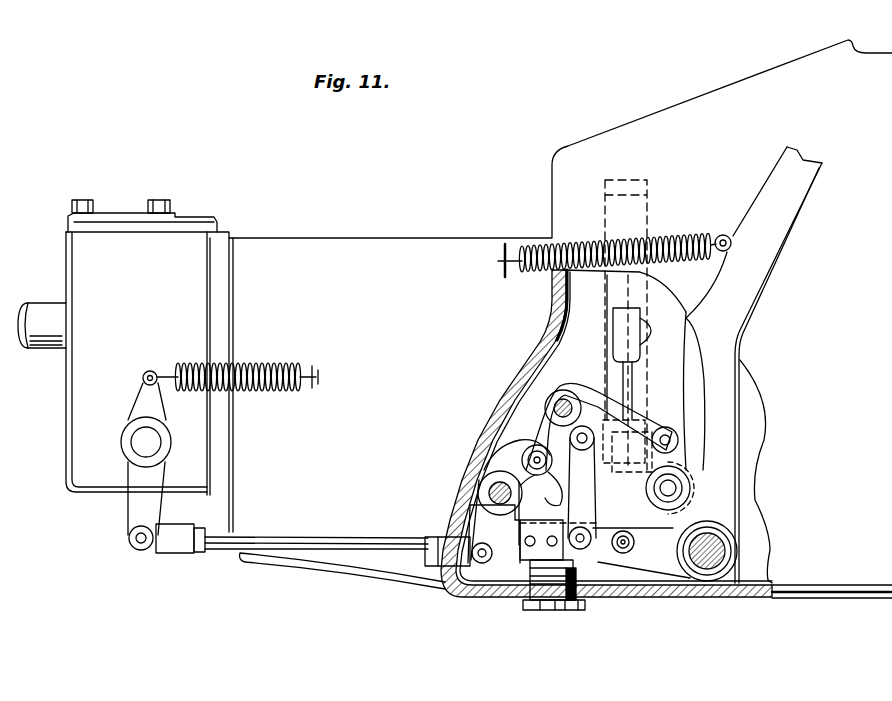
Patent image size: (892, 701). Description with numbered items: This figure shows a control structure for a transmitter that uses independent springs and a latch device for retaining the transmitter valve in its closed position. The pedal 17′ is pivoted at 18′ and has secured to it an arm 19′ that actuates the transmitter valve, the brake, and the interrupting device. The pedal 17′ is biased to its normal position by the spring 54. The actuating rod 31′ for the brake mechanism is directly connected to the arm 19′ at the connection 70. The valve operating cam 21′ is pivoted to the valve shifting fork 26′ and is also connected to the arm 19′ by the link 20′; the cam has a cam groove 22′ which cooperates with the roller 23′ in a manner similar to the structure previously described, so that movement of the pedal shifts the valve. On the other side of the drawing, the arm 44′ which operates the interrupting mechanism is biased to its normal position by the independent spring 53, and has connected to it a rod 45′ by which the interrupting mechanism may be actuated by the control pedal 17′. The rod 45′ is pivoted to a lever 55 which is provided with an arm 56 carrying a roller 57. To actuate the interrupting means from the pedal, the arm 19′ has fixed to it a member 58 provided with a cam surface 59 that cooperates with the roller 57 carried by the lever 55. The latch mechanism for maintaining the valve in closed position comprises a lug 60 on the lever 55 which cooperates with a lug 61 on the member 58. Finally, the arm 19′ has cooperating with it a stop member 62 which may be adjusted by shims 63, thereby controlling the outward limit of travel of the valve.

The pedal 17′ is at (745, 313).
The pivot 18′ is at (710, 560).
The arm 19′ is at (662, 560).
The link 20′ is at (600, 562).
The valve operating cam 21′ is at (591, 388).
The cam groove 22′ is at (530, 411).
The roller 23′ is at (565, 390).
The valve shifting fork 26′ is at (672, 397).
The actuating rod 31′ is at (680, 472).
The arm 44′ is at (137, 502).
The rod 45′ is at (300, 563).
The independent spring 53 is at (258, 363).
The spring 54 is at (668, 242).
The lever 55 is at (473, 525).
The arm 56 is at (527, 451).
The roller 57 is at (510, 437).
The member 58 is at (546, 552).
The cam surface 59 is at (486, 485).
The lug 60 is at (503, 556).
The lug 61 is at (526, 568).
The stop member 62 is at (555, 602).
The shims 63 is at (582, 606).
The connection 70 is at (622, 562).